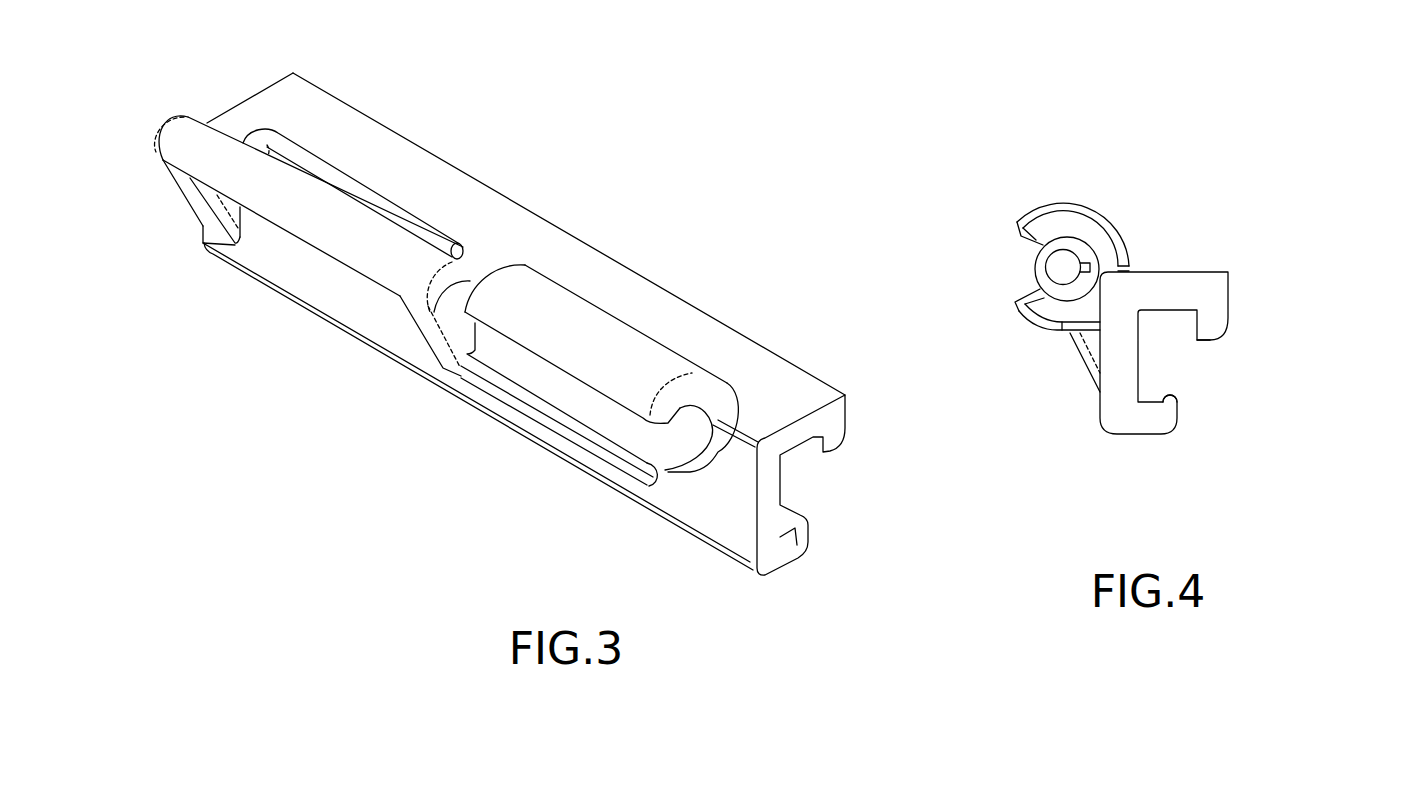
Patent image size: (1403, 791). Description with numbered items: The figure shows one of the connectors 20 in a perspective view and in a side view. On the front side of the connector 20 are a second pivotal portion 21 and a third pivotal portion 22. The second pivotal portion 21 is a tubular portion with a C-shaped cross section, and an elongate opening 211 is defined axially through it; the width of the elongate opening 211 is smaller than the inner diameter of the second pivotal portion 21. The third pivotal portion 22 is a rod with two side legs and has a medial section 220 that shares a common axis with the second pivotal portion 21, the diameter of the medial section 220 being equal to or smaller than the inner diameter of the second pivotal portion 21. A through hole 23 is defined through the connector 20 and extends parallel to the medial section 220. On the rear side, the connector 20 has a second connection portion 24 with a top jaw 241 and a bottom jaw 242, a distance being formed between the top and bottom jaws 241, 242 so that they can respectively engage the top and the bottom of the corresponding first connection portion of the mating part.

In FIG. 3, the connector 20 is at (548, 243).
In FIG. 3, the second pivotal portion 21 is at (610, 423).
In FIG. 4, the second pivotal portion 21 is at (1060, 296).
In FIG. 4, the elongate opening 211 is at (1018, 273).
In FIG. 3, the third pivotal portion 22 is at (313, 220).
In FIG. 4, the third pivotal portion 22 is at (1072, 244).
In FIG. 3, the medial section 220 is at (353, 252).
In FIG. 4, the medial section 220 is at (1062, 244).
In FIG. 3, the through hole 23 is at (352, 188).
In FIG. 3, the second connection portion 24 is at (823, 452).
In FIG. 4, the second connection portion 24 is at (1173, 353).
In FIG. 4, the top jaw 241 is at (1213, 337).
In FIG. 4, the bottom jaw 242 is at (1176, 403).